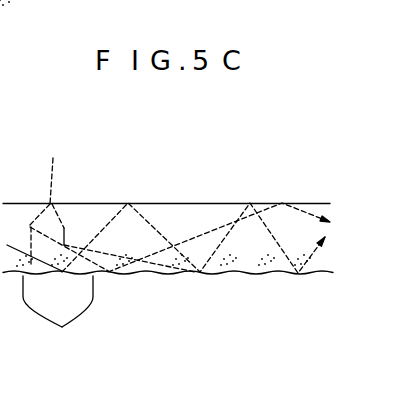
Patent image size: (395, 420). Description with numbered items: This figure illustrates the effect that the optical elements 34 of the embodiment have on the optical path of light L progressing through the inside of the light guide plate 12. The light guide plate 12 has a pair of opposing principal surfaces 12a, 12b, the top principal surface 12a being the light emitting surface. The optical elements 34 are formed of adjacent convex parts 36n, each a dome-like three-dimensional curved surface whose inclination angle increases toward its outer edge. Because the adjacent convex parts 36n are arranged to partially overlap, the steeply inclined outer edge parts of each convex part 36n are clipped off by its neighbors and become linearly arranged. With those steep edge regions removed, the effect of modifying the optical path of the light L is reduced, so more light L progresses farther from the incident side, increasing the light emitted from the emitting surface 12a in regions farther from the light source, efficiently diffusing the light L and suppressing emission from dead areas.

The light guide plate 12 is at (168, 245).
The principal surface 12a is at (183, 203).
The principal surface 12b is at (158, 277).
The optical elements 34 is at (260, 293).
The convex part 36n is at (63, 276).
The light L is at (50, 164).